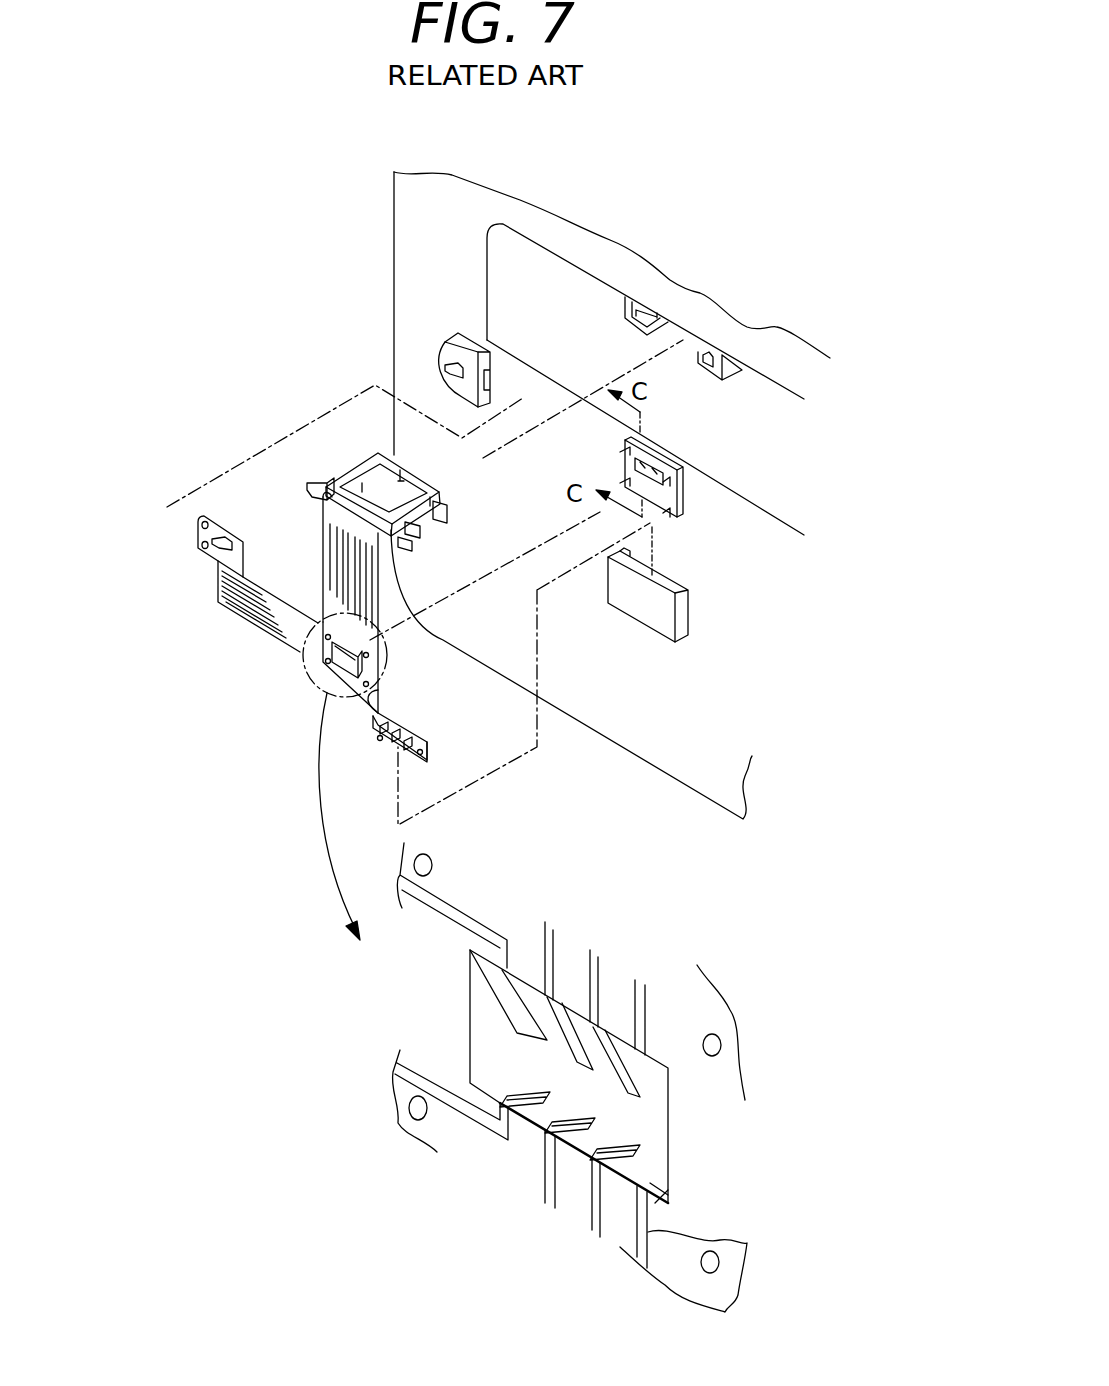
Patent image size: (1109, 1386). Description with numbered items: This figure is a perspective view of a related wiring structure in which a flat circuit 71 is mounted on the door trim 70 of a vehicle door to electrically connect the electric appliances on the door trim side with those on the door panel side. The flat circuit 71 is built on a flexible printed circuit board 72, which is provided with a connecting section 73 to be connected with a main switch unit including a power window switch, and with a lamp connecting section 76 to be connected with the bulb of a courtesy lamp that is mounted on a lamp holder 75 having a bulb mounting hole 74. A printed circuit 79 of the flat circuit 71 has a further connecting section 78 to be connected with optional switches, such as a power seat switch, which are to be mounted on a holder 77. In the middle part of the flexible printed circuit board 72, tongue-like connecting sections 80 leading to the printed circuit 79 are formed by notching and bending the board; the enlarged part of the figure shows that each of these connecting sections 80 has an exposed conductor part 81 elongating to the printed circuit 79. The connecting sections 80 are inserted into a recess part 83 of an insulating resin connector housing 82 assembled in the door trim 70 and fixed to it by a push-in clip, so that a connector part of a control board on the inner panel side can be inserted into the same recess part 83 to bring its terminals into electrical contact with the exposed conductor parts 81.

The door trim 70 is at (610, 495).
The flat circuit 71 is at (313, 566).
The flexible printed circuit board 72 is at (384, 603).
The connecting section 73 is at (376, 494).
The bulb mounting hole 74 is at (452, 372).
The lamp holder 75 is at (441, 337).
The lamp connecting section 76 is at (196, 540).
The holder 77 is at (642, 607).
The connecting section 78 is at (430, 743).
The printed circuit 79 is at (327, 535).
The connecting sections 80 is at (497, 1080).
The exposed conductor part 81 is at (627, 1160).
The connector housing 82 is at (682, 497).
The recess part 83 is at (637, 470).